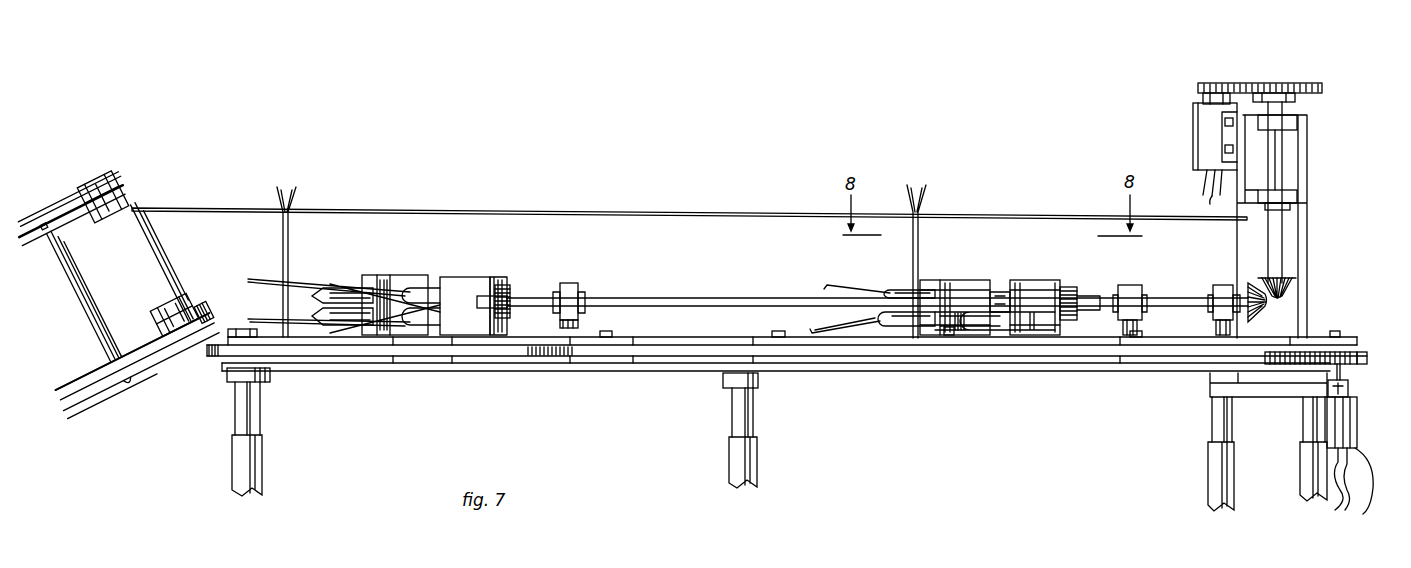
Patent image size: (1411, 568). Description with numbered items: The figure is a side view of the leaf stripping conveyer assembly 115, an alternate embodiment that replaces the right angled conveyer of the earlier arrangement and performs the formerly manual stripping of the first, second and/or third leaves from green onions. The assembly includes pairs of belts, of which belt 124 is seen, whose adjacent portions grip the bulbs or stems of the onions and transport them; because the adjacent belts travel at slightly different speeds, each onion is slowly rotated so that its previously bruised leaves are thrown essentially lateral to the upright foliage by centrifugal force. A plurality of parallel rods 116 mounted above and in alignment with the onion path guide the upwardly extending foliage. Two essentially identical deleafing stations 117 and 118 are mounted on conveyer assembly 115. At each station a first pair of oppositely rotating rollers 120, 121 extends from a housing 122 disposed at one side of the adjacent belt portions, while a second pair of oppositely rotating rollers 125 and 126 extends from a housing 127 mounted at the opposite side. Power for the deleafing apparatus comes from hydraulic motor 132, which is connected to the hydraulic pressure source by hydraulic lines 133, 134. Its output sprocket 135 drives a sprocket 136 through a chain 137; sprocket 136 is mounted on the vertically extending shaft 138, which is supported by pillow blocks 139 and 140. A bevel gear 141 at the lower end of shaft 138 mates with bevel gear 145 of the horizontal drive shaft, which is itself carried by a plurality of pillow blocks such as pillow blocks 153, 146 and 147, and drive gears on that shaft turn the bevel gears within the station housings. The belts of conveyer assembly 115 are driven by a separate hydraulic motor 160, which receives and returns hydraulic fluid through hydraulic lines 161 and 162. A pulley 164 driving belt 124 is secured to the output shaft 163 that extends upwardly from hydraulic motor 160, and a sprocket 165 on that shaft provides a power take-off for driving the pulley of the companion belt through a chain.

The conveyer assembly 115 is at (478, 372).
The parallel rods 116 is at (511, 208).
The deleafing station 117 is at (459, 277).
The deleafing station 118 is at (1040, 277).
The roller 120 is at (892, 291).
The roller 121 is at (880, 312).
The housing 122 is at (968, 280).
The belt 124 is at (651, 355).
The roller 125 is at (993, 292).
The roller 126 is at (980, 336).
The housing 127 is at (1037, 333).
The hydraulic motor 132 is at (1193, 127).
The hydraulic line 133 is at (1205, 181).
The hydraulic line 134 is at (1223, 194).
The output sprocket 135 is at (1200, 86).
The sprocket 136 is at (1305, 83).
The chain 137 is at (1240, 82).
The vertically extending shaft 138 is at (1282, 160).
The pillow block 139 is at (1295, 120).
The pillow block 140 is at (1297, 203).
The bevel gear 141 is at (1277, 290).
The bevel gear 145 is at (1262, 318).
The pillow block 146 is at (1125, 284).
The pillow block 147 is at (559, 283).
The pillow block 153 is at (1227, 290).
The hydraulic motor 160 is at (1361, 472).
The hydraulic line 161 is at (1352, 482).
The hydraulic line 162 is at (1348, 482).
The output shaft 163 is at (1348, 398).
The pulley 164 is at (1380, 337).
The sprocket 165 is at (1318, 387).